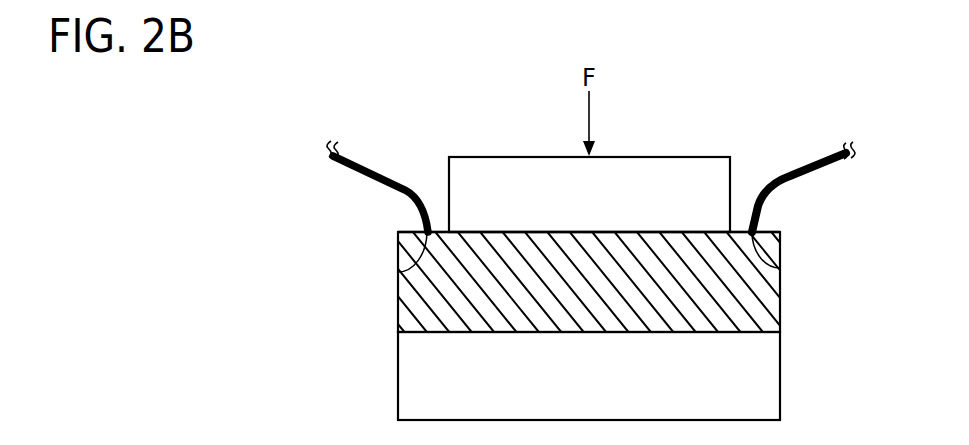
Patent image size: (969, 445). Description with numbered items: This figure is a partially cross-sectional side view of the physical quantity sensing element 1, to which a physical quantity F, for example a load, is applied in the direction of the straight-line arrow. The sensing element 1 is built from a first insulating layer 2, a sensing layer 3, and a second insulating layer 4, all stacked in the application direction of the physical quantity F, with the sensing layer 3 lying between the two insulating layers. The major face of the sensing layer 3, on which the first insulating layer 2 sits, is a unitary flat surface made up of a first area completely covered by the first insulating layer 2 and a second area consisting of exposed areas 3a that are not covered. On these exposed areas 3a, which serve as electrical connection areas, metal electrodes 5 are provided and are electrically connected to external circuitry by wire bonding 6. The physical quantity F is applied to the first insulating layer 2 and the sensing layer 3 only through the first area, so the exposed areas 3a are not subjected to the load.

The physical quantity sensing element 1 is at (802, 104).
The first insulating layer 2 is at (668, 157).
The sensing layer 3 is at (782, 310).
The exposed areas 3a is at (398, 273).
The second insulating layer 4 is at (772, 382).
The metal electrodes 5 is at (782, 237).
The wire bonding 6 is at (803, 176).